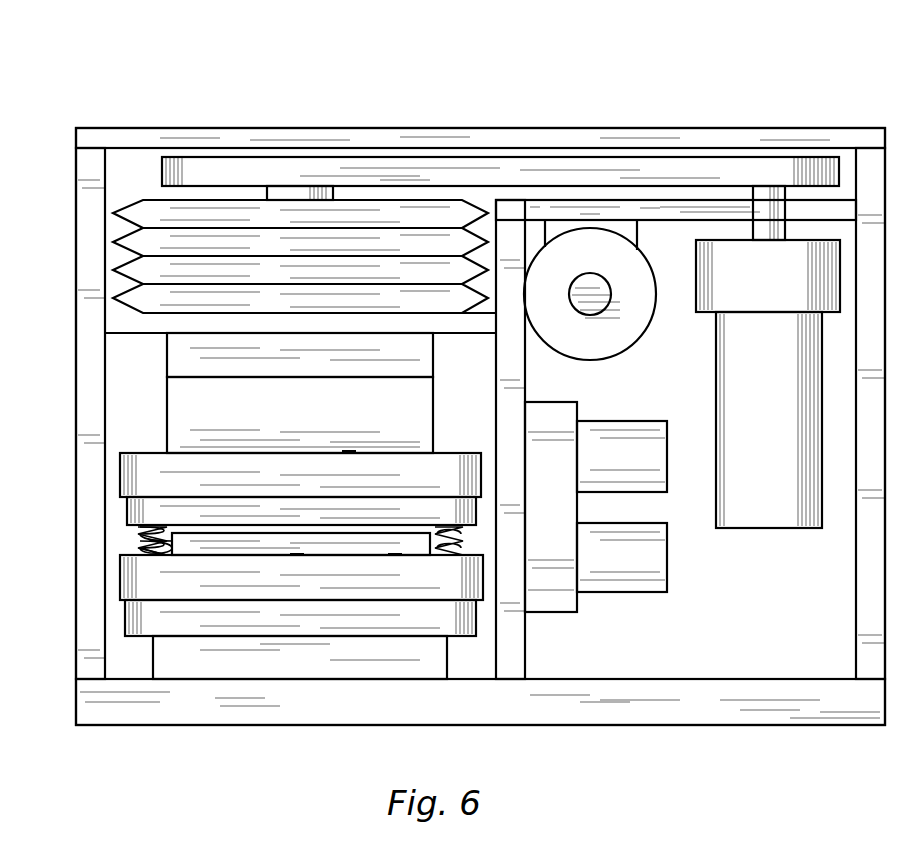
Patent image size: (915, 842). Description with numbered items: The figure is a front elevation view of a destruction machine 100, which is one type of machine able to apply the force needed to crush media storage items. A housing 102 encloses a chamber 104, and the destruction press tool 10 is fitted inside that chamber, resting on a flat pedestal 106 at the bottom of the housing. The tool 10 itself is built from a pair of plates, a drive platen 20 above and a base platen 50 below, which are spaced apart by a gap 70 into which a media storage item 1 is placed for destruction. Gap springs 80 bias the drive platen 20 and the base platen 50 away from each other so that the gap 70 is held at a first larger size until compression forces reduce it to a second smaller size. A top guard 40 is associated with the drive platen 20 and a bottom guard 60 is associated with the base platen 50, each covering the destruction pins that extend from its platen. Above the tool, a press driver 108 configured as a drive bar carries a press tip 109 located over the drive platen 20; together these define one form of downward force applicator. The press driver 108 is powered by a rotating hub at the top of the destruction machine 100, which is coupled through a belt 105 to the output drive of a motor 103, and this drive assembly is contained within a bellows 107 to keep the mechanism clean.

The destruction machine 100 is at (388, 105).
The housing 102 is at (145, 137).
The chamber 104 is at (122, 367).
The belt 105 is at (616, 163).
The flat pedestal 106 is at (230, 657).
The bellows 107 is at (135, 250).
The press driver 108 is at (413, 365).
The press tip 109 is at (400, 398).
The motor 103 is at (768, 384).
The destruction press tool 10 is at (141, 449).
The drive platen 20 is at (132, 477).
The top guard 40 is at (135, 513).
The gap 70 is at (122, 540).
The media storage item 1 is at (190, 540).
The bottom guard 60 is at (133, 590).
The base platen 50 is at (143, 622).
The gap spring 80 is at (448, 555).